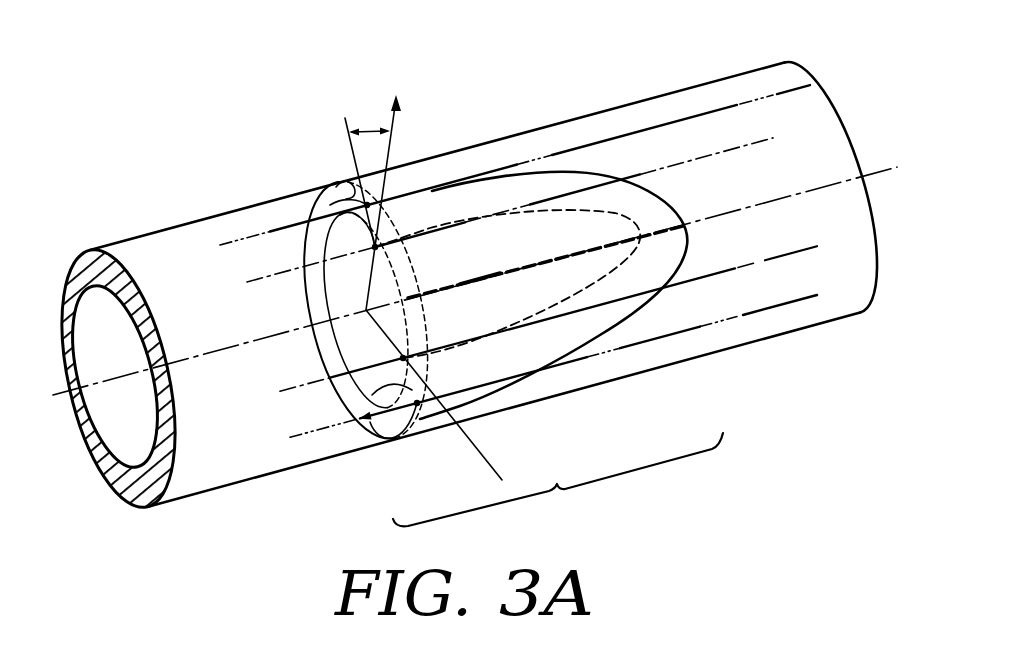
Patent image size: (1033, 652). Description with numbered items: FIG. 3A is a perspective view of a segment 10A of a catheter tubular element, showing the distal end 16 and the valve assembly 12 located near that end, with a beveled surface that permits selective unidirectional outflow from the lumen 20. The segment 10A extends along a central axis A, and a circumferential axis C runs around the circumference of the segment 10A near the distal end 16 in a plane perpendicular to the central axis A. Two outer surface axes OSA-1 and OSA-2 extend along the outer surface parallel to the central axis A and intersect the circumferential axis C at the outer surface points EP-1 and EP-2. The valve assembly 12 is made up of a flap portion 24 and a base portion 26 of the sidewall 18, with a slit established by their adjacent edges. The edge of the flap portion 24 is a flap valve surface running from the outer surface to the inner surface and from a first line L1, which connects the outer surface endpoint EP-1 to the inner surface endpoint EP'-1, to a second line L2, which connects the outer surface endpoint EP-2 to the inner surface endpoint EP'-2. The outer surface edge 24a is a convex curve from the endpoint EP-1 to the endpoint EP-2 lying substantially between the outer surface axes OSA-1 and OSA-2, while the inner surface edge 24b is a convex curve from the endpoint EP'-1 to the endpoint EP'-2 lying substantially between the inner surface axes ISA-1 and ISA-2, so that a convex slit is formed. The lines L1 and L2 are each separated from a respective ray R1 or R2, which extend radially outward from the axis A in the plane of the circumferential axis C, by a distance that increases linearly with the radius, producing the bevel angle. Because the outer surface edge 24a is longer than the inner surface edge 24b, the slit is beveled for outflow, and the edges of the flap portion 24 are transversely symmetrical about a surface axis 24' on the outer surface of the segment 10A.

The segment 10A is at (438, 61).
The valve assembly 12 is at (558, 479).
The distal end 16 is at (764, 48).
The sidewall 18 is at (206, 223).
The lumen 20 is at (120, 351).
The flap portion 24 is at (507, 284).
The surface axis 24' is at (469, 262).
The outer surface edge 24a is at (668, 283).
The inner surface edge 24b is at (613, 276).
The base portion 26 is at (741, 248).
The central axis A is at (893, 168).
The outer surface axis OSA-1 is at (677, 122).
The outer surface axis OSA-2 is at (780, 308).
The inner surface axis ISA-1 is at (773, 137).
The inner surface axis ISA-2 is at (758, 264).
The outer surface endpoint EP-1 is at (350, 201).
The outer surface endpoint EP-2 is at (421, 407).
The inner surface endpoint EP'-1 is at (326, 310).
The inner surface endpoint EP'-2 is at (335, 355).
The first line L1 is at (340, 218).
The second line L2 is at (373, 395).
The ray R1 is at (393, 145).
The ray R2 is at (478, 449).
The circumferential axis C is at (345, 186).